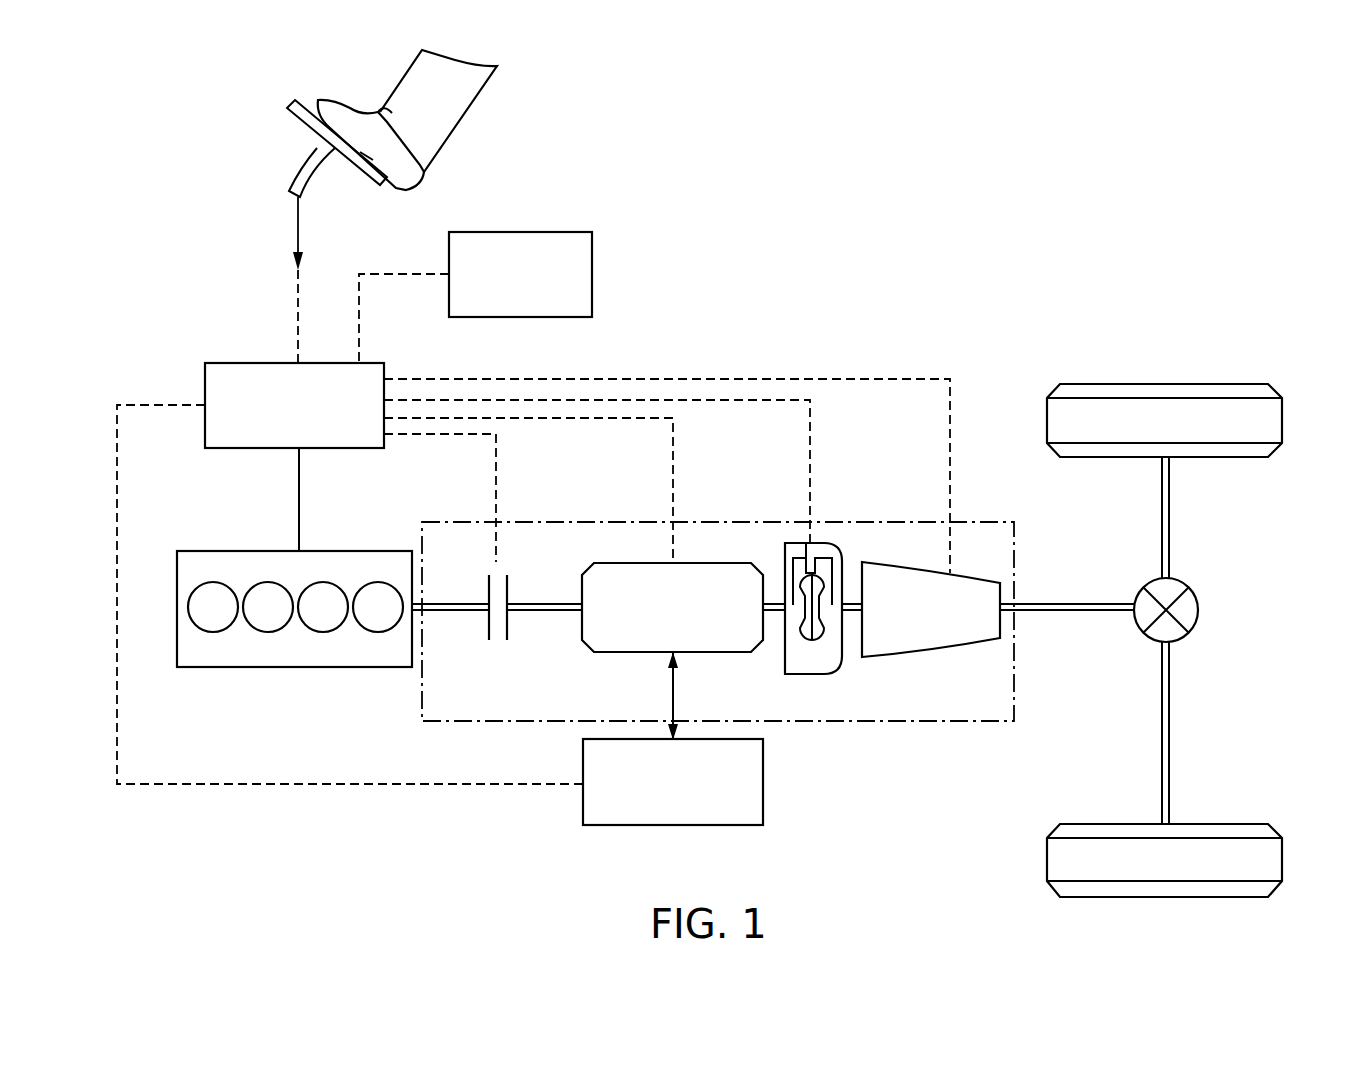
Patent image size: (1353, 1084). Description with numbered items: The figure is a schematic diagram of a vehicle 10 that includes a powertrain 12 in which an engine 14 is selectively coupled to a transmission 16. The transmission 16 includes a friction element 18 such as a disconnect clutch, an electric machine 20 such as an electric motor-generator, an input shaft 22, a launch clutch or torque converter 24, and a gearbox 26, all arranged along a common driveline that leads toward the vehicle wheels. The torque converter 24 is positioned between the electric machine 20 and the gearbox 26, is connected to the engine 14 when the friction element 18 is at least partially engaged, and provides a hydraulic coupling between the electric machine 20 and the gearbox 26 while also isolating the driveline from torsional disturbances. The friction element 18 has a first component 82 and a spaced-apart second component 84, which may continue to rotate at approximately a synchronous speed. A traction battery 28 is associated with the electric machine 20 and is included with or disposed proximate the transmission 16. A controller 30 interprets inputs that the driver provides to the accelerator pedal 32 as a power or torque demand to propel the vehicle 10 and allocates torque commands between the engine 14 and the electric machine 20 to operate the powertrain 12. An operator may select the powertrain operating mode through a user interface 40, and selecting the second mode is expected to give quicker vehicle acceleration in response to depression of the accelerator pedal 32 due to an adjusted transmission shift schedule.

The vehicle 10 is at (1040, 146).
The powertrain 12 is at (412, 812).
The engine 14 is at (217, 551).
The transmission 16 is at (969, 721).
The friction element 18 is at (499, 640).
The electric machine 20 is at (605, 652).
The input shaft 22 is at (780, 614).
The torque converter 24 is at (842, 652).
The gearbox 26 is at (898, 655).
The traction battery 28 is at (763, 766).
The controller 30 is at (243, 363).
The accelerator pedal 32 is at (297, 120).
The user interface 40 is at (555, 232).
The first component 82 is at (489, 590).
The second component 84 is at (507, 590).